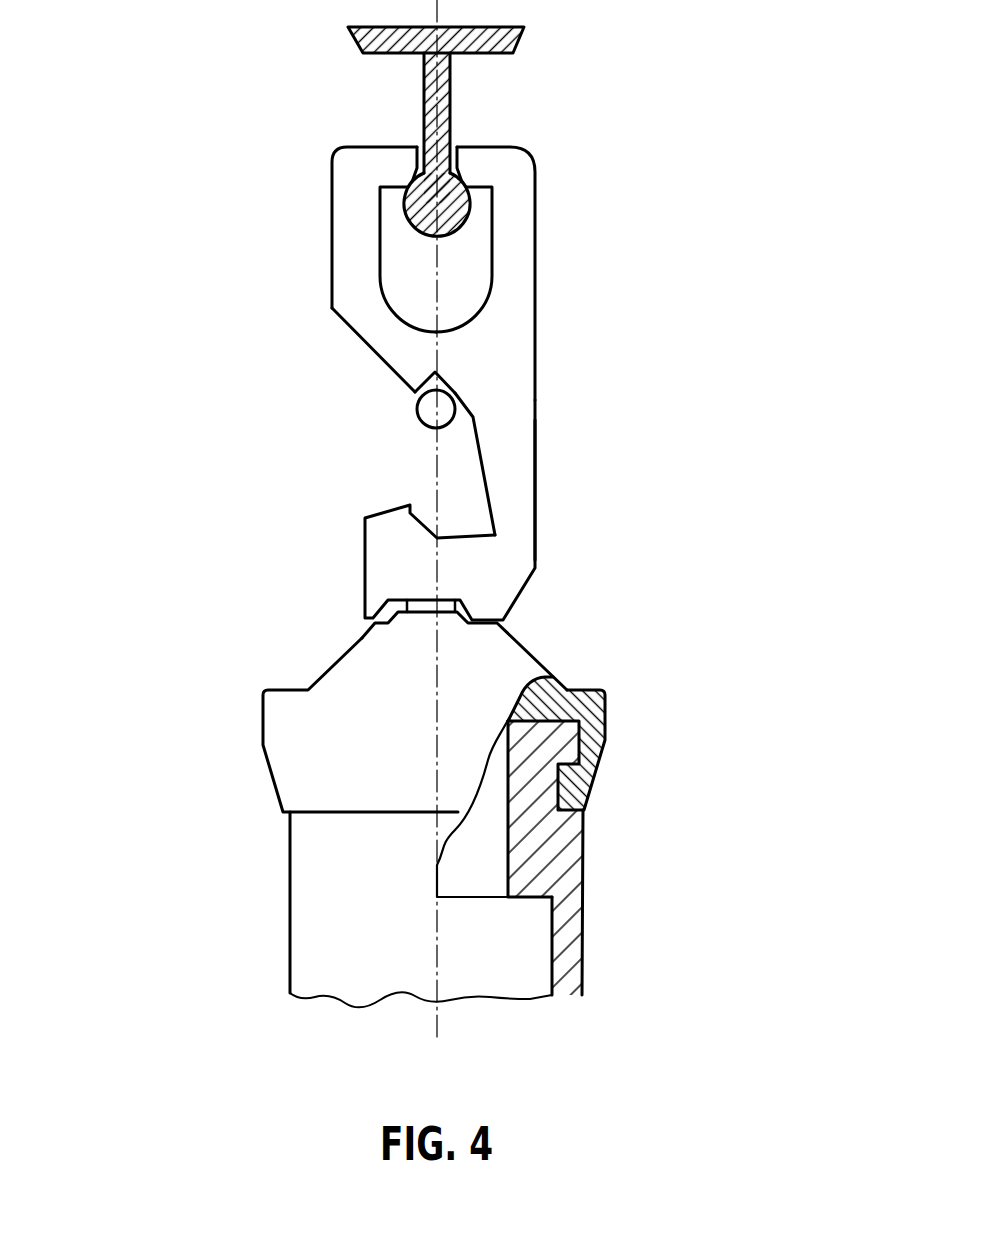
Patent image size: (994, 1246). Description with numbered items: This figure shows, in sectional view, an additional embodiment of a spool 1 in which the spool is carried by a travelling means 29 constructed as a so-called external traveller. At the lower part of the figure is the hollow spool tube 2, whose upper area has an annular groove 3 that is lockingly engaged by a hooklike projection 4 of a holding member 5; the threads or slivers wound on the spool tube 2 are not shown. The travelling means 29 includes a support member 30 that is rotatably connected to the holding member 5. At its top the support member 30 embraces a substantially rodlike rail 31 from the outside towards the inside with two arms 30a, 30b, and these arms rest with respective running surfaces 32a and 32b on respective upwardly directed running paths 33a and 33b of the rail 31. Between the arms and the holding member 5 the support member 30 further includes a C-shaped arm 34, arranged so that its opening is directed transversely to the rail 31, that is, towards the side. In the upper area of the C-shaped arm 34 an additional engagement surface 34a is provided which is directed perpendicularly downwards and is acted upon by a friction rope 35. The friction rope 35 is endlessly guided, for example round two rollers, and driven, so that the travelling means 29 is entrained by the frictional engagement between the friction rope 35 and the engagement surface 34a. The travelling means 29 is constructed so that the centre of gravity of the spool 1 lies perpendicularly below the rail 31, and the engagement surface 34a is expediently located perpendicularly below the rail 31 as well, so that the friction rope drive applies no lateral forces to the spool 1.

The spool 1 is at (243, 788).
The spool tube 2 is at (575, 935).
The annular groove 3 is at (577, 814).
The hooklike projection 4 is at (577, 786).
The holding member 5 is at (567, 690).
The travelling means 29 is at (567, 418).
The support member 30 is at (495, 383).
The arm 30a is at (360, 177).
The arm 30b is at (517, 185).
The rail 31 is at (417, 220).
The running surface 32a is at (403, 175).
The running surface 32b is at (465, 175).
The running path 33a is at (403, 211).
The running path 33b is at (468, 213).
The C-shaped arm 34 is at (505, 475).
The additional engagement surface 34a is at (452, 398).
The friction rope 35 is at (420, 405).